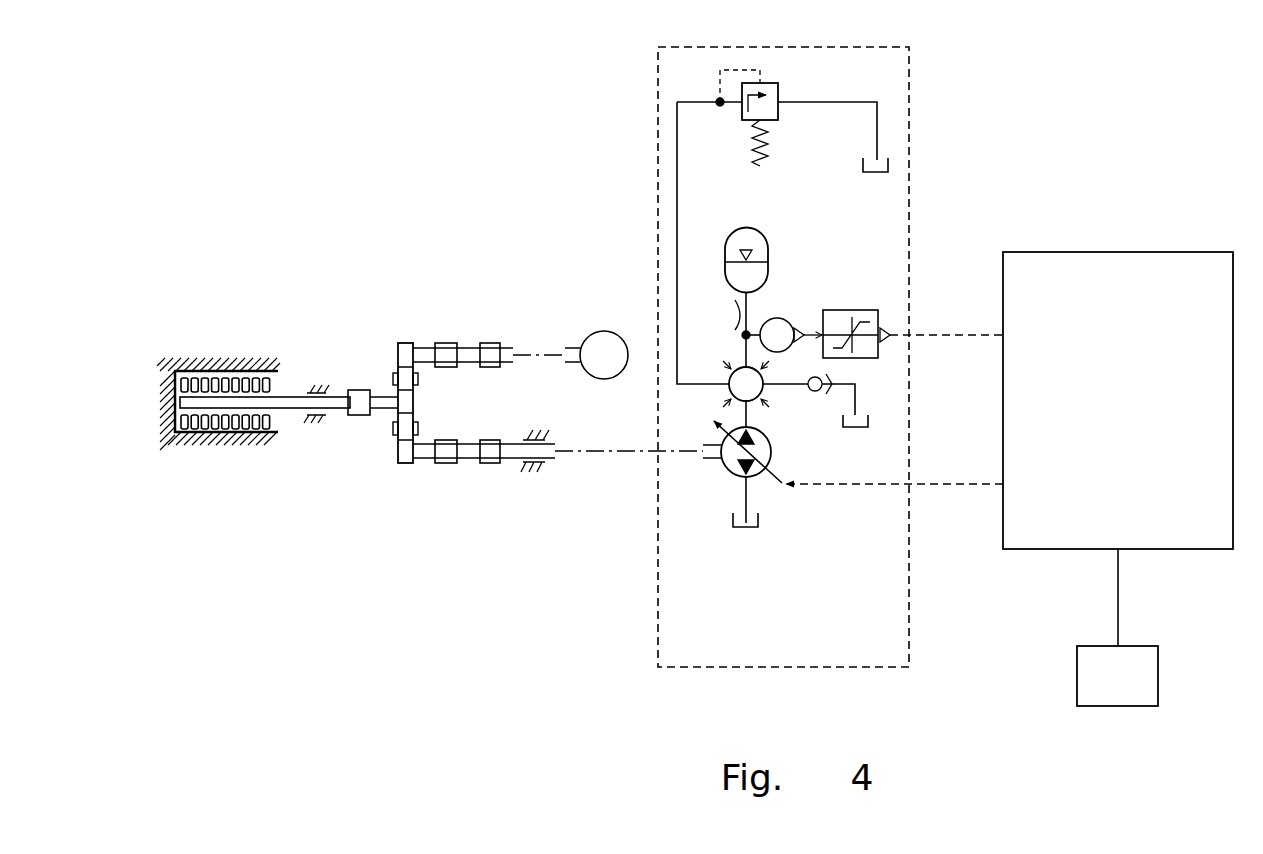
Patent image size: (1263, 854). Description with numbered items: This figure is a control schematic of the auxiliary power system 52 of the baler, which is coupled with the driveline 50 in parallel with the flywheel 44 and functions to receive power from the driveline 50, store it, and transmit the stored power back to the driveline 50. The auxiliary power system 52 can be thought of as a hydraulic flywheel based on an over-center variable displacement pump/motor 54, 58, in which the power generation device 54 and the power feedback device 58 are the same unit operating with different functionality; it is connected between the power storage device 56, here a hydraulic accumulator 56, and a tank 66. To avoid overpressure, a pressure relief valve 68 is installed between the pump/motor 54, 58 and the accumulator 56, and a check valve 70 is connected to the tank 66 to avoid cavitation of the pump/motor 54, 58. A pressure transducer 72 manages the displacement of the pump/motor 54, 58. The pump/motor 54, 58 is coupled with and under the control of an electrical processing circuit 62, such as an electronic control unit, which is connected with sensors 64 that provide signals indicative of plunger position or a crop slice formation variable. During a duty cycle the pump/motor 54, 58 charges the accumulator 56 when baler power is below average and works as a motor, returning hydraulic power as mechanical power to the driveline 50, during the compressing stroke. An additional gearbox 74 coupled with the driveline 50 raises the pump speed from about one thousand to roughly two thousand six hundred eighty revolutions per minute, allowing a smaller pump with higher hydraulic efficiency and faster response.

The flywheel 44 is at (220, 363).
The driveline 50 is at (328, 366).
The auxiliary power system 52 is at (856, 335).
The power generation device 54 is at (795, 481).
The power storage device 56 is at (743, 227).
The power feedback device 58 is at (760, 472).
The electrical processing circuit 62 is at (1163, 252).
The sensor 64 is at (1158, 667).
The tank 66 is at (890, 163).
The pressure relief valve 68 is at (782, 88).
The check valve 70 is at (763, 391).
The pressure transducer 72 is at (783, 318).
The additional gearbox 74 is at (392, 456).